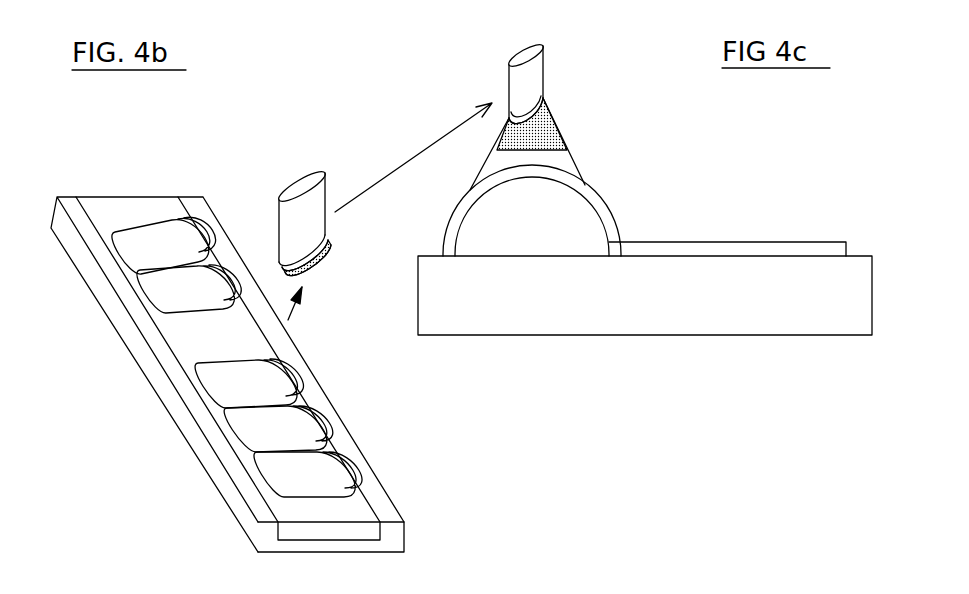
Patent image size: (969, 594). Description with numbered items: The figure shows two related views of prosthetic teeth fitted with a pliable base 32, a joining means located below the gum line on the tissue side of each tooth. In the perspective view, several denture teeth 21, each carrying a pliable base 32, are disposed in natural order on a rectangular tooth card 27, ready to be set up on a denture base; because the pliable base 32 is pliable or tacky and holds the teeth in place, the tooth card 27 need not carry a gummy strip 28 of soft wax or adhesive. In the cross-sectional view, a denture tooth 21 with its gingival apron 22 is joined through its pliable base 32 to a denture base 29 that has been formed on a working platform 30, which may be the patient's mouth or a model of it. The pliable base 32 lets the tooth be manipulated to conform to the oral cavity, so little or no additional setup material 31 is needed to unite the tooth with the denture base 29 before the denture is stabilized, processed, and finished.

In FIG. 4b, the denture tooth 21 is at (326, 173).
In FIG. 4c, the denture tooth 21 is at (510, 71).
In FIG. 4c, the gingival apron 22 is at (545, 100).
In FIG. 4b, the tooth card 27 is at (130, 212).
In FIG. 4b, the gummy strip 28 is at (380, 500).
In FIG. 4c, the denture base 29 is at (756, 245).
In FIG. 4c, the working platform 30 is at (865, 265).
In FIG. 4c, the setup material 31 is at (571, 173).
In FIG. 4b, the pliable base 32 is at (314, 274).
In FIG. 4c, the pliable base 32 is at (548, 131).